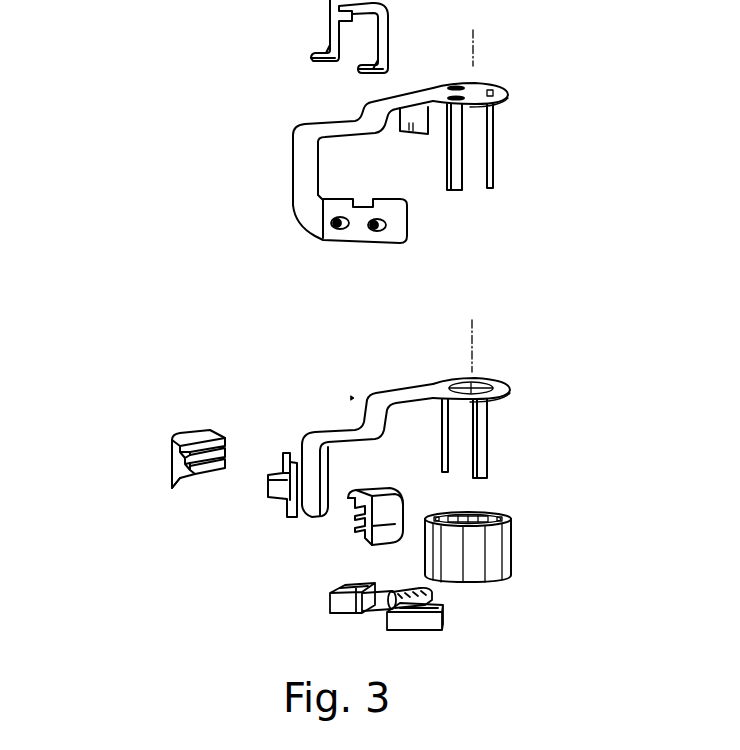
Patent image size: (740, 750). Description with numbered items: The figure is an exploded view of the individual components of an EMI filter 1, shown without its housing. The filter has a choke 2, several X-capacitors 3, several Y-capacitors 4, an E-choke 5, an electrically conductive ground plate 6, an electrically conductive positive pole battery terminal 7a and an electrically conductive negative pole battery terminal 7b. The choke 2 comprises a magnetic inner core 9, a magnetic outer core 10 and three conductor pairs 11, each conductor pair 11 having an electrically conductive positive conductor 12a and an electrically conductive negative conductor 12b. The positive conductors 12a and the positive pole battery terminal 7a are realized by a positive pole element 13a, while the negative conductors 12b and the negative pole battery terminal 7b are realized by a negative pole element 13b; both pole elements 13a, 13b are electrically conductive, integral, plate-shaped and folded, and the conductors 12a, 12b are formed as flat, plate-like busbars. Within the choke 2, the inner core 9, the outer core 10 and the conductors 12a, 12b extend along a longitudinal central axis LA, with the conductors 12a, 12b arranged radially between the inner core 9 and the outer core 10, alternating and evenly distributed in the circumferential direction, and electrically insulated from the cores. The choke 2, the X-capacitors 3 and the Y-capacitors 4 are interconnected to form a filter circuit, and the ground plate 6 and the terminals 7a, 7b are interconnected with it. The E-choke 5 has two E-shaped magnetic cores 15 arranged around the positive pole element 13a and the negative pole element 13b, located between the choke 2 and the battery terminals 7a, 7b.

The EMI filter 1 is at (596, 132).
The choke 2 is at (593, 476).
The X-capacitors 3 is at (412, 596).
The Y-capacitors 4 is at (332, 606).
The E-choke 5 is at (178, 463).
The ground plate 6 is at (341, 3).
The positive pole battery terminal 7a is at (283, 500).
The negative pole battery terminal 7b is at (355, 226).
The inner core 9 is at (476, 514).
The outer core 10 is at (490, 558).
The conductor pairs 11 is at (531, 291).
The positive conductor 12a is at (445, 428).
The negative conductor 12b is at (455, 192).
The positive pole element 13a is at (331, 431).
The negative pole element 13b is at (293, 162).
The E-shaped magnetic cores 15 is at (233, 511).
The longitudinal central axis LA is at (473, 52).